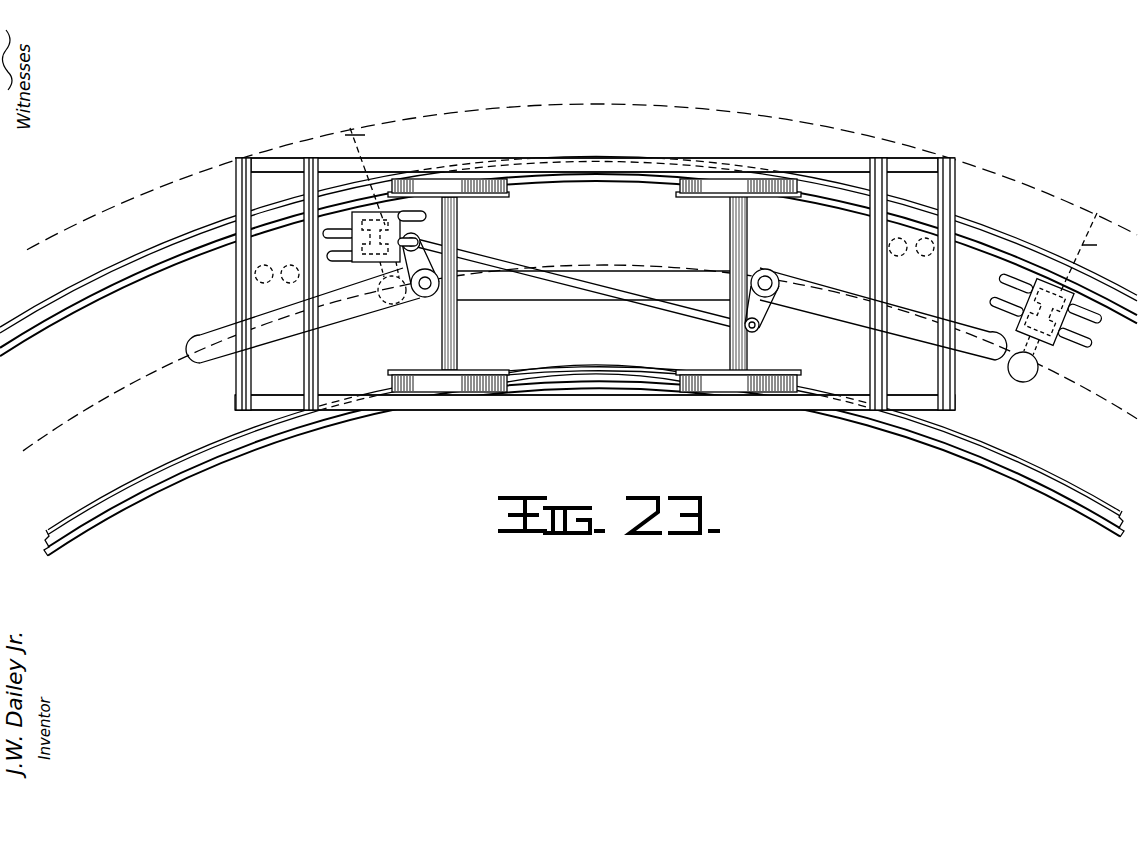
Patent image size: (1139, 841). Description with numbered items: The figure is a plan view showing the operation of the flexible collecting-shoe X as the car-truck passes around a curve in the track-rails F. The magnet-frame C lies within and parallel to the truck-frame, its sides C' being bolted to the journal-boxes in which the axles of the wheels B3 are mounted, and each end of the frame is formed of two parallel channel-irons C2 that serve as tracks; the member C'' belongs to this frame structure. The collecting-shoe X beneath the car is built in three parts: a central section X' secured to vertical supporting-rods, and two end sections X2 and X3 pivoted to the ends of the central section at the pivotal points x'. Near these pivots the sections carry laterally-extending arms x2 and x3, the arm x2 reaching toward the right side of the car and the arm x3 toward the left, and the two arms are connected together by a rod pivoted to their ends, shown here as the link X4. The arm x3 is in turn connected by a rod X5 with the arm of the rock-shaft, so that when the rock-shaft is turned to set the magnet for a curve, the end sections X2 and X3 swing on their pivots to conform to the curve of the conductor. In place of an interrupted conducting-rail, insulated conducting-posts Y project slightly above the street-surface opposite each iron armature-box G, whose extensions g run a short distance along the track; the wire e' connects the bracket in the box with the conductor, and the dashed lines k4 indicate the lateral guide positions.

The track-rails F is at (996, 245).
The magnet-frame C is at (584, 333).
The sides of the magnet-frame C' is at (568, 232).
The frame cross bar C'' is at (596, 405).
The channel-irons C2 is at (308, 374).
The wheels B3 is at (462, 192).
The collecting-shoe X is at (593, 268).
The central section of the collecting-shoe X' is at (595, 264).
The end section of the collecting-shoe X2 is at (820, 290).
The end section of the collecting-shoe X3 is at (340, 320).
The diagonal link rod X4 is at (501, 266).
The rod X5 is at (832, 328).
The pivotal points x' is at (596, 290).
The laterally-extending arm x2 is at (765, 322).
The laterally-extending arm x3 is at (420, 265).
The extensions of the armature-box g is at (327, 256).
The armature-boxes G is at (1058, 338).
The wire e' is at (723, 243).
The insulated conducting-posts Y is at (388, 306).
The guide line k4 is at (730, 200).